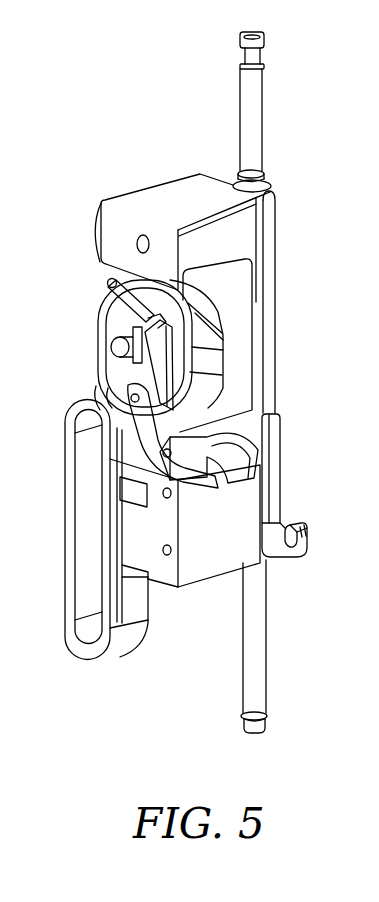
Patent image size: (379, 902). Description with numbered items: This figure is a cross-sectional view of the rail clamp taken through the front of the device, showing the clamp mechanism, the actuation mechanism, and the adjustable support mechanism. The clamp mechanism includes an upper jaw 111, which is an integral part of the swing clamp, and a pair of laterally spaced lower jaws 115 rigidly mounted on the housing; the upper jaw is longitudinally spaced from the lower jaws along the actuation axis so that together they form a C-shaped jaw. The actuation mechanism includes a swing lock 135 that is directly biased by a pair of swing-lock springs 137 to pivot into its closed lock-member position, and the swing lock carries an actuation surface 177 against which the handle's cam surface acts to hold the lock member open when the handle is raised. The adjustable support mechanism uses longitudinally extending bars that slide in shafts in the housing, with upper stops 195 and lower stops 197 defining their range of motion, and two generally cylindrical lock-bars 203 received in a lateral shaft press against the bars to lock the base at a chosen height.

The upper jaw 111 is at (263, 466).
The lower jaws 115 is at (283, 556).
The swing lock 135 is at (155, 369).
The swing-lock springs 137 is at (123, 289).
The actuation surface 177 is at (150, 369).
The upper stops 195 is at (258, 175).
The lower stops 197 is at (258, 718).
The lock-bars 203 is at (137, 244).